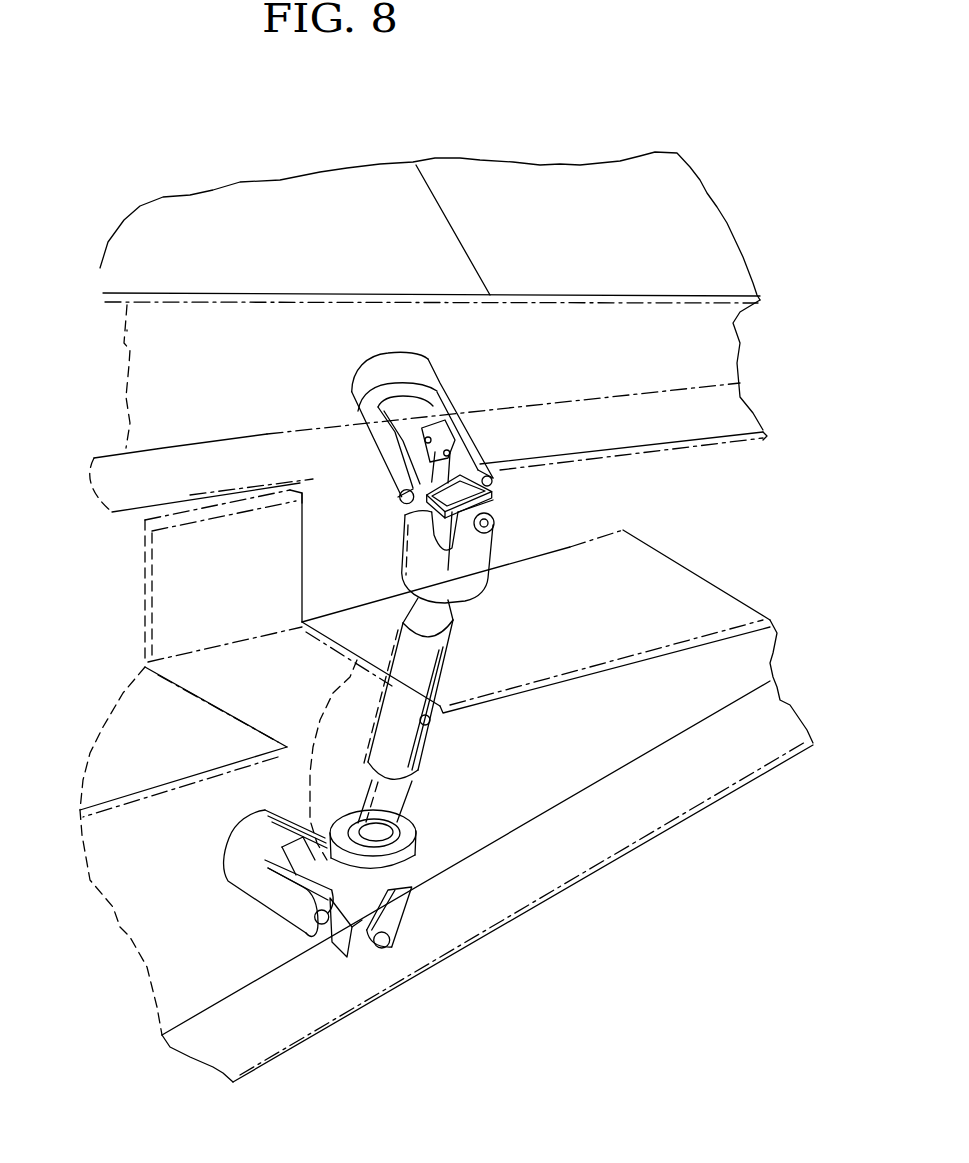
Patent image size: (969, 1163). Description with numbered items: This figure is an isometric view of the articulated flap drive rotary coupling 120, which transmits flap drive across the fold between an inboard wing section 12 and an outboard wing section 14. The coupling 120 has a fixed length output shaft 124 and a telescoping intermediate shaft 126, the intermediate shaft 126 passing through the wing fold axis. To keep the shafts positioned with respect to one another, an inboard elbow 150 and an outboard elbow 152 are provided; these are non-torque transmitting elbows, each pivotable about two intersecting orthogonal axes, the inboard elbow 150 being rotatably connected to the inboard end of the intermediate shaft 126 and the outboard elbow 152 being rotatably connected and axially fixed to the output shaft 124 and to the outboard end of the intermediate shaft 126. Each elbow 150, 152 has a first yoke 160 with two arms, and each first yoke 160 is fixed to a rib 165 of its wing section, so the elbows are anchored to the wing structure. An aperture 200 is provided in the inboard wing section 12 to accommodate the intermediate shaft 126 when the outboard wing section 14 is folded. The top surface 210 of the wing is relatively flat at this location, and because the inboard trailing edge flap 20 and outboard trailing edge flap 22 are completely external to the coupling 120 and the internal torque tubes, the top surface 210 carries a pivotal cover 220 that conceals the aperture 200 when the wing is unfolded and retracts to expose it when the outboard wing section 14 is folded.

The inboard wing section 12 is at (408, 985).
The outboard wing section 14 is at (94, 455).
The inboard trailing edge flap 20 is at (555, 752).
The outboard trailing edge flap 22 is at (606, 371).
The articulated flap drive rotary coupling 120 is at (582, 571).
The output shaft 124 is at (440, 407).
The telescoping intermediate shaft 126 is at (418, 774).
The inboard elbow 150 is at (258, 943).
The outboard elbow 152 is at (508, 528).
The first yoke 160 is at (395, 364).
The rib 165 is at (236, 369).
The aperture 200 is at (192, 692).
The top surface 210 is at (146, 784).
The pivotal cover 220 is at (307, 560).